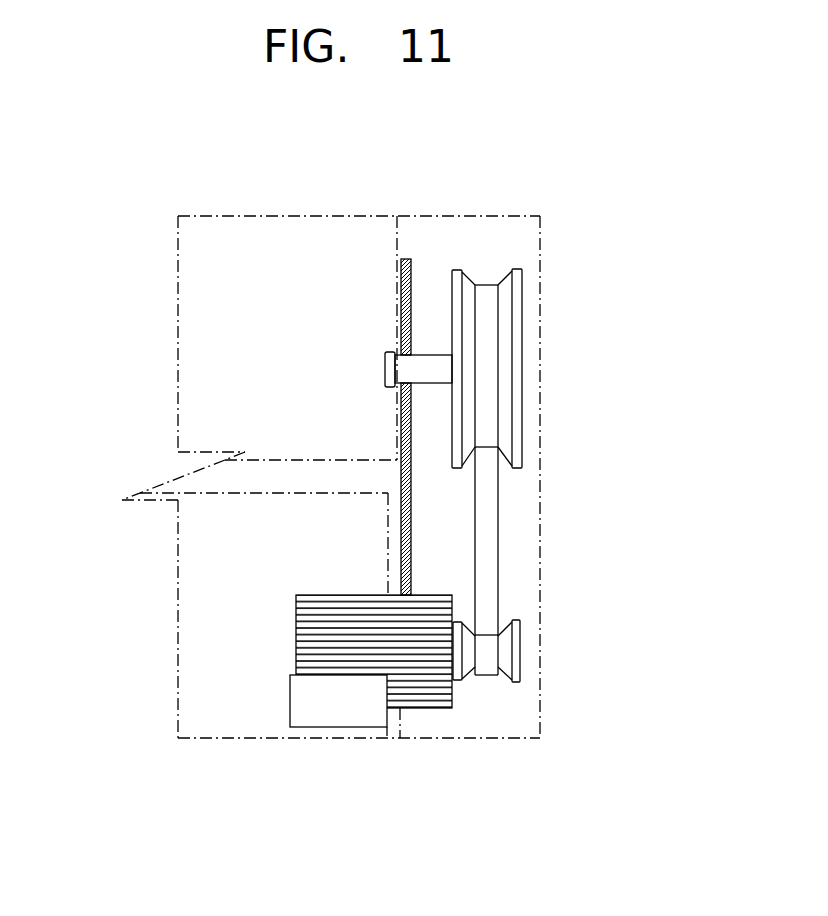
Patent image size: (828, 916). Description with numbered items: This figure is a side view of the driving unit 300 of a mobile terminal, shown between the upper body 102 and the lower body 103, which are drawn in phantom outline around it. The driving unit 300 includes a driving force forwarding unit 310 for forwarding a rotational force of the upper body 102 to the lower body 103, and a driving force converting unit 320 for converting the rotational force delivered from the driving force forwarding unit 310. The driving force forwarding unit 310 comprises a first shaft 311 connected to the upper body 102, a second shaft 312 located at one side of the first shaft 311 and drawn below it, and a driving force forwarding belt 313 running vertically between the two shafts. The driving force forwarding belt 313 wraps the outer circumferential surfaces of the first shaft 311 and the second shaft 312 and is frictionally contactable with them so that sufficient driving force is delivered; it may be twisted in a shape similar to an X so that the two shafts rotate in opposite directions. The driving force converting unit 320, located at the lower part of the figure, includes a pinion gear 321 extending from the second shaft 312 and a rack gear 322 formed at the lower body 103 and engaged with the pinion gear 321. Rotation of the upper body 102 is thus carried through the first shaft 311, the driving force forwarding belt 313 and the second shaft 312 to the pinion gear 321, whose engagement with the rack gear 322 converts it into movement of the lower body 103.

The upper body 102 is at (285, 228).
The lower body 103 is at (225, 726).
The driving unit 300 is at (556, 765).
The driving force forwarding unit 310 is at (524, 475).
The first shaft 311 is at (522, 371).
The second shaft 312 is at (534, 651).
The driving force forwarding belt 313 is at (490, 520).
The driving force converting unit 320 is at (371, 719).
The pinion gear 321 is at (423, 698).
The rack gear 322 is at (338, 741).